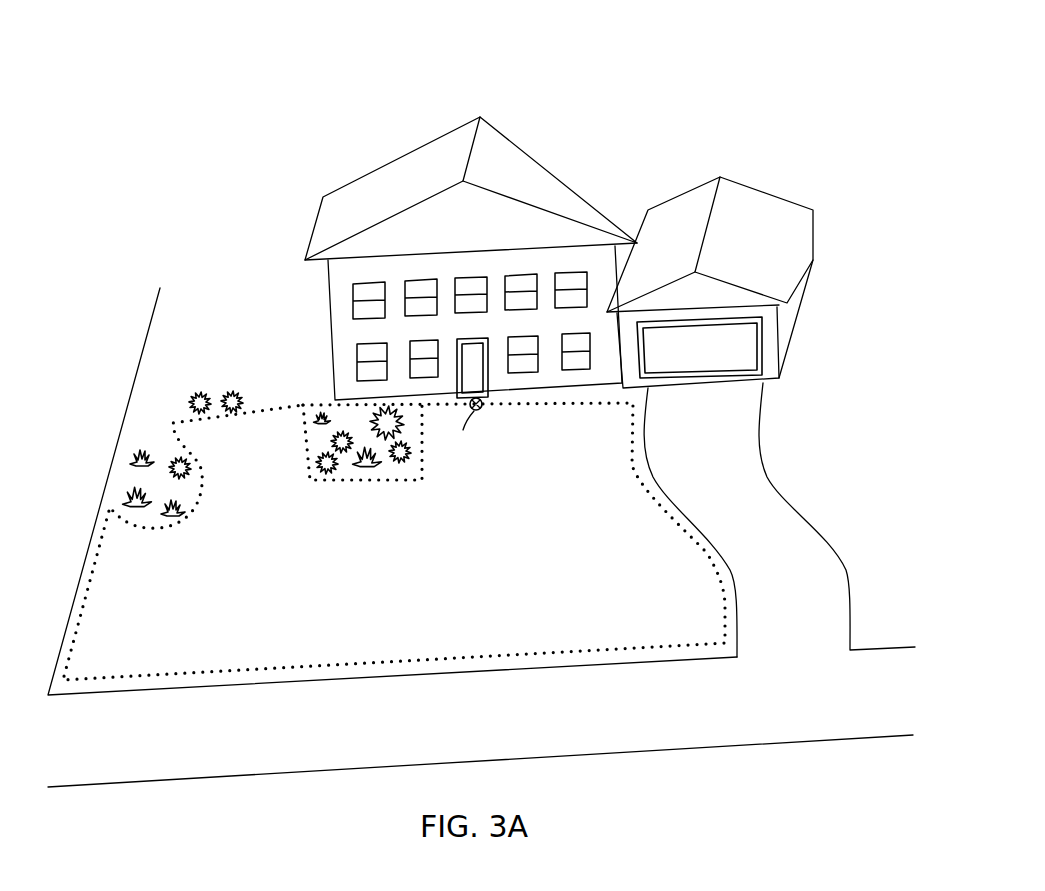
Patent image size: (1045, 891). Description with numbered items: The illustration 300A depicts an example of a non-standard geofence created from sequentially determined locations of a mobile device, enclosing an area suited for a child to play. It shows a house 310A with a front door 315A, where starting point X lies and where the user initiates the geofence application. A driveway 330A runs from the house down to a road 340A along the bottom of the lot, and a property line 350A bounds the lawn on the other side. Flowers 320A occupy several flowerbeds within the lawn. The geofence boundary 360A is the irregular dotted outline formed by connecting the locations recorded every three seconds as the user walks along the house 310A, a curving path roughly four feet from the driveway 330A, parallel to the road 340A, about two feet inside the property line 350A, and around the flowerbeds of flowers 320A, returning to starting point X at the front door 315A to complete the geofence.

The illustration 300A is at (703, 122).
The house 310A is at (547, 150).
The front door 315A is at (480, 373).
The flowers 320A is at (307, 422).
The driveway 330A is at (757, 490).
The road 340A is at (532, 757).
The property line 350A is at (212, 687).
The geofence boundary 360A is at (705, 550).